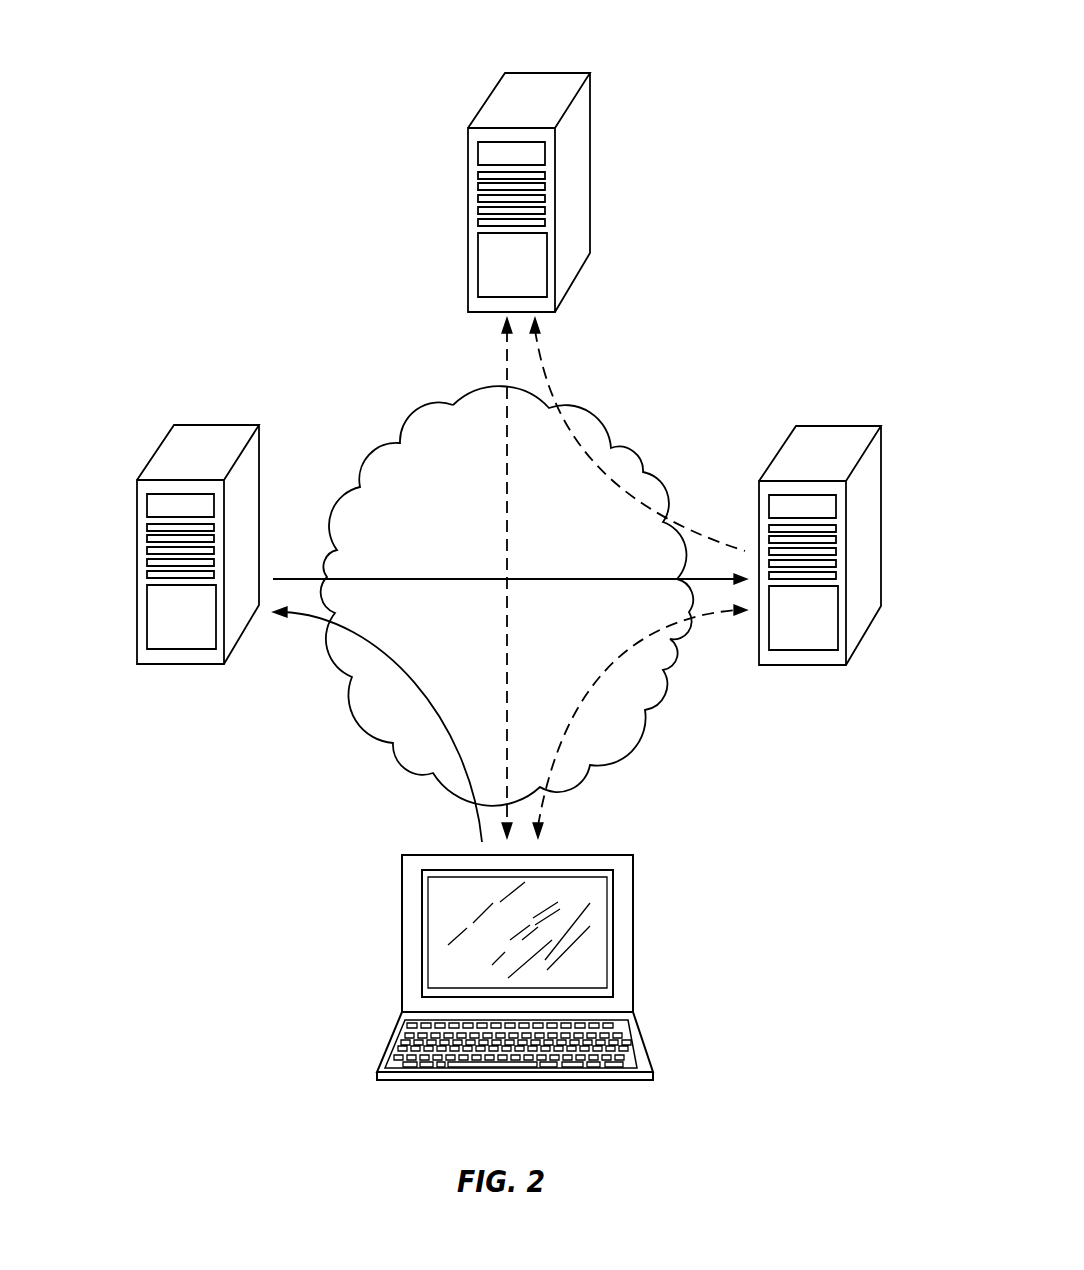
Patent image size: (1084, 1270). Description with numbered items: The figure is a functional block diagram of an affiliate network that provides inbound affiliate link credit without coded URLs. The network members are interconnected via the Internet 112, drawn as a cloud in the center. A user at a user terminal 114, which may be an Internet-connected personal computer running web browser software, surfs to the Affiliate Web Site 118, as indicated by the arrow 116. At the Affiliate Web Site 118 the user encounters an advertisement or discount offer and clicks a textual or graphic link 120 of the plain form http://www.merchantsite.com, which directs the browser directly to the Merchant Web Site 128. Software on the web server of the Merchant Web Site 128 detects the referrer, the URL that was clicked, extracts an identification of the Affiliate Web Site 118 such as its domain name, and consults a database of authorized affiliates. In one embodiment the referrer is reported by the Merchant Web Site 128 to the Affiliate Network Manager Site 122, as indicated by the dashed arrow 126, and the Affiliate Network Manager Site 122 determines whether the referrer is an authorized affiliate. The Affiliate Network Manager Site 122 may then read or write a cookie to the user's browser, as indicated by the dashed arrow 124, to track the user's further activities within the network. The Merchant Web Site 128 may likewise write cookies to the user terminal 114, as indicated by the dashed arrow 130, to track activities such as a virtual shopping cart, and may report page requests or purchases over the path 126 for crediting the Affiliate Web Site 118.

The Internet 112 is at (606, 417).
The user terminal 114 is at (402, 907).
The arrow 116 is at (473, 808).
The Affiliate Web Site 118 is at (172, 433).
The link 120 is at (310, 578).
The Affiliate Network Manager Site 122 is at (591, 140).
The dashed arrow 124 is at (508, 655).
The dashed arrow 126 is at (542, 360).
The Merchant Web Site 128 is at (843, 425).
The dashed arrow 130 is at (545, 803).